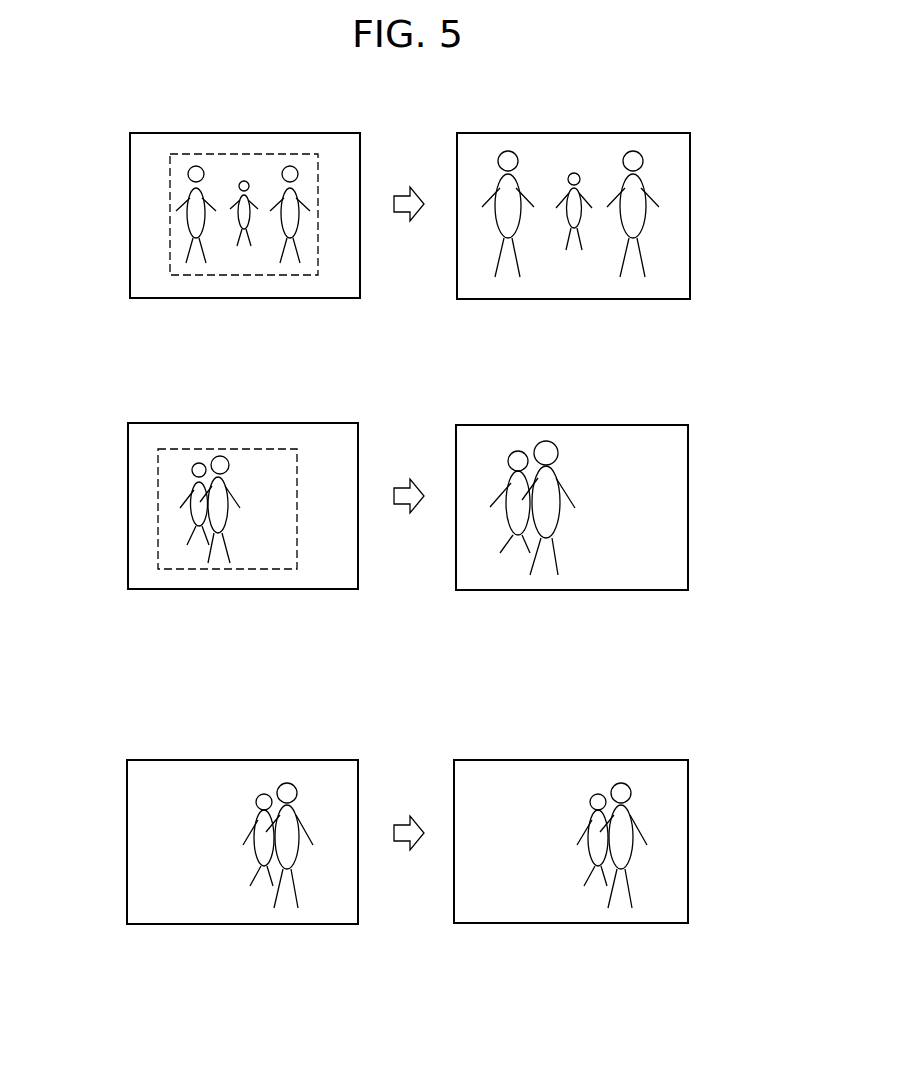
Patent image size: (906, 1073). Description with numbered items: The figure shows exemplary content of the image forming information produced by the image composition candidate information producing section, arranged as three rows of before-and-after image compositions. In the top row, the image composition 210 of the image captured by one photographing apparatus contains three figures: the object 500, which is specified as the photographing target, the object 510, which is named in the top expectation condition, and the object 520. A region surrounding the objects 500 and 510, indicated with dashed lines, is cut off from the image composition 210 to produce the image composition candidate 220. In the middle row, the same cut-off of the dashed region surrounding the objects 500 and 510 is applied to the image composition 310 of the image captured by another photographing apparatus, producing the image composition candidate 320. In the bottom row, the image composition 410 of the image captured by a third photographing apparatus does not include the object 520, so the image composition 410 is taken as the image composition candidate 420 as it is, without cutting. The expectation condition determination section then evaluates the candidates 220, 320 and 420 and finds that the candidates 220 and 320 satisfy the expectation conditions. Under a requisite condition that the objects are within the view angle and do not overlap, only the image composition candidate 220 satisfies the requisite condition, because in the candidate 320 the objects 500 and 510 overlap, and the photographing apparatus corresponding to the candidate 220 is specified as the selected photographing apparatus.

The image composition 210 is at (130, 172).
The image composition candidate 220 is at (690, 180).
The image composition 310 is at (128, 531).
The image composition candidate 320 is at (688, 473).
The image composition 410 is at (127, 802).
The image composition candidate 420 is at (688, 801).
The object 500 is at (188, 218).
The object 510 is at (298, 222).
The object 520 is at (243, 177).